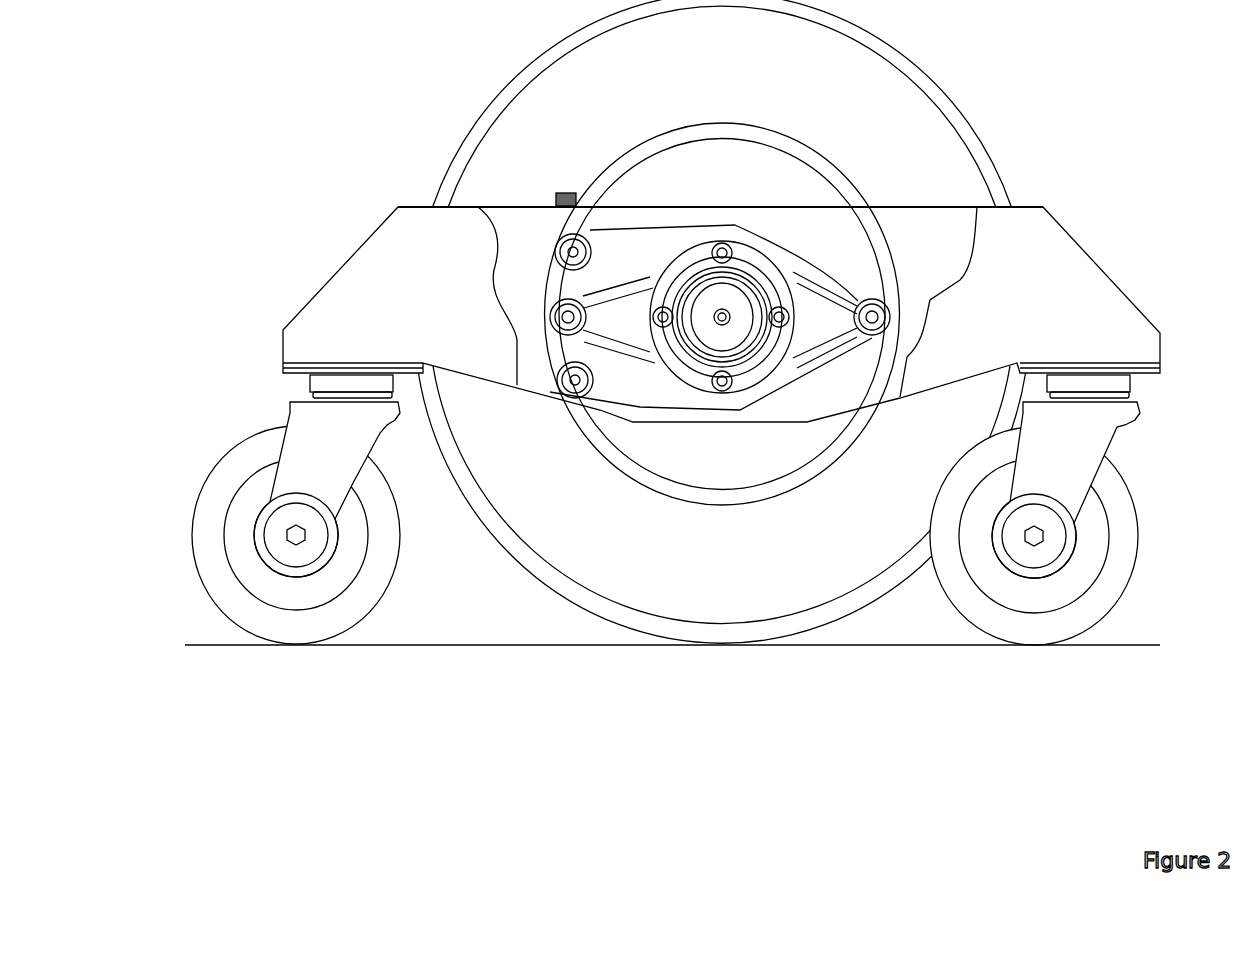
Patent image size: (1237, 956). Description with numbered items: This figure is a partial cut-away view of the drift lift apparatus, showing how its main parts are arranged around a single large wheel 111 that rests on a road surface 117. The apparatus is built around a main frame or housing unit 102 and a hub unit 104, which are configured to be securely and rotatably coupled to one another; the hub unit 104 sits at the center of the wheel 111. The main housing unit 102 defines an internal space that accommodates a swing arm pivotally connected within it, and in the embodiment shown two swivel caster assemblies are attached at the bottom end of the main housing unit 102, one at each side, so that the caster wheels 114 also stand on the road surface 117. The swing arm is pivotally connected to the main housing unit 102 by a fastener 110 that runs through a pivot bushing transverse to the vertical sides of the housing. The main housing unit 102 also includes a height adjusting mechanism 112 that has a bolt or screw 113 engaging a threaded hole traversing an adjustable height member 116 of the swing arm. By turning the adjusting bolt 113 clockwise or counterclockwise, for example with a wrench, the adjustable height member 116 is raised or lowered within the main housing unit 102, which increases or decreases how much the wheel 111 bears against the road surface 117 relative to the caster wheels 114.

The main housing unit 102 is at (376, 228).
The hub unit 104 is at (702, 340).
The fastener 110 is at (878, 305).
The wheel 111 is at (745, 580).
The height adjusting mechanism 112 is at (1083, 318).
The adjusting bolt 113 is at (558, 190).
The caster wheels 114 is at (223, 555).
The adjustable height member 116 is at (552, 305).
The road surface 117 is at (435, 645).